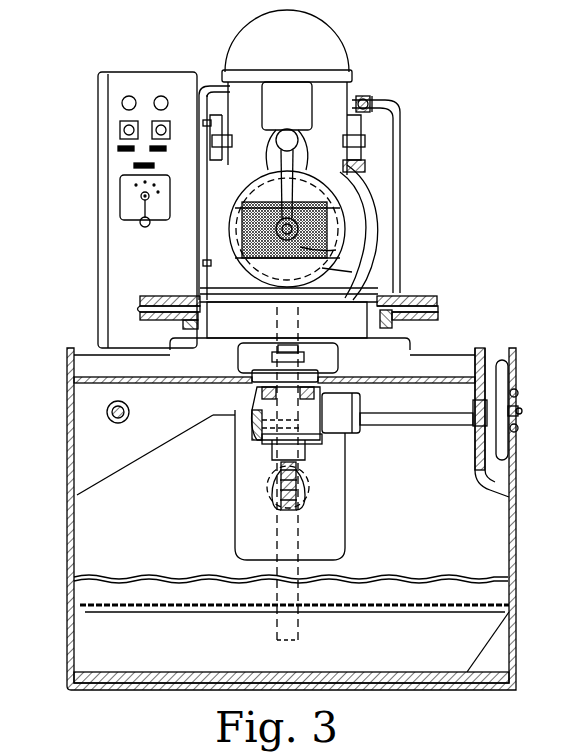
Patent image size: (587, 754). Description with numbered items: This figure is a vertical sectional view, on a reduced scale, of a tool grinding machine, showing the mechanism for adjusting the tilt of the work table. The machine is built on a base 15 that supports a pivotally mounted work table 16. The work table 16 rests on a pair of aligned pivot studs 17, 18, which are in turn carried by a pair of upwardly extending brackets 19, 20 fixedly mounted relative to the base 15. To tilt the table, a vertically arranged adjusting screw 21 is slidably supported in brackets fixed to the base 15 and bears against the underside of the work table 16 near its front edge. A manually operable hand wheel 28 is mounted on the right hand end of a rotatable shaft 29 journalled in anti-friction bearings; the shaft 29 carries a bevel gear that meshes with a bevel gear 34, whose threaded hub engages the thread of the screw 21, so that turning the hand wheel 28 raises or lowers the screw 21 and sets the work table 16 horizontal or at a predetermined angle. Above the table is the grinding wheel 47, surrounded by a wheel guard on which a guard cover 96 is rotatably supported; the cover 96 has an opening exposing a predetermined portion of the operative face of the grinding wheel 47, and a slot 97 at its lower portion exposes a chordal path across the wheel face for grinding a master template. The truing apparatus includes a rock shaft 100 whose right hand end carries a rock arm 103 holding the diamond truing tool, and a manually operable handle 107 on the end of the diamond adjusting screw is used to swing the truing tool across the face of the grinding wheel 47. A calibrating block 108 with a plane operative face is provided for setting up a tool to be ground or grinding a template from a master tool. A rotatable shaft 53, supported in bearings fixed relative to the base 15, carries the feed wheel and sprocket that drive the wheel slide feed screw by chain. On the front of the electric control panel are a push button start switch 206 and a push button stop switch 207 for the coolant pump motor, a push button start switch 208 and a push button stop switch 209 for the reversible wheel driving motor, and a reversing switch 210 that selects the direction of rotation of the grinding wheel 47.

The base 15 is at (67, 535).
The work table 16 is at (172, 297).
The pivot stud 17 is at (140, 299).
The pivot stud 18 is at (438, 304).
The bracket 19 is at (184, 326).
The bracket 20 is at (393, 325).
The adjusting screw 21 is at (300, 493).
The hand wheel 28 is at (503, 440).
The rotatable shaft 29 is at (424, 416).
The bevel gear 34 is at (262, 404).
The grinding wheel 47 is at (250, 238).
The rotatable shaft 53 is at (107, 409).
The guard cover 96 is at (336, 270).
The slot 97 is at (337, 250).
The rock shaft 100 is at (281, 135).
The rock arm 103 is at (368, 232).
The handle 107 is at (292, 229).
The calibrating block 108 is at (304, 80).
The push button start switch 206 is at (158, 96).
The push button stop switch 207 is at (166, 126).
The push button start switch 208 is at (125, 97).
The push button stop switch 209 is at (124, 127).
The reversing switch 210 is at (141, 205).